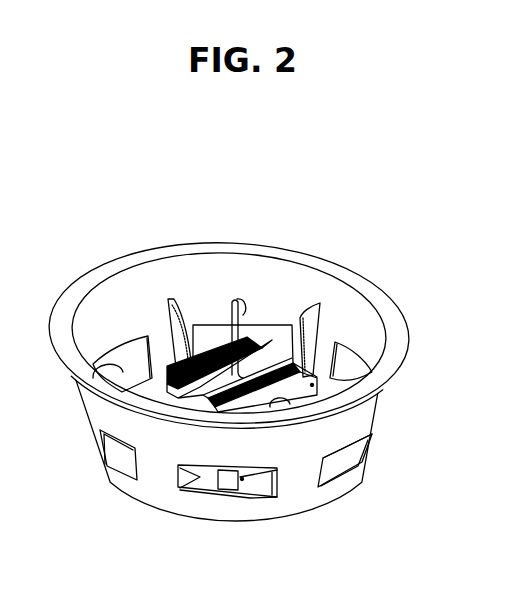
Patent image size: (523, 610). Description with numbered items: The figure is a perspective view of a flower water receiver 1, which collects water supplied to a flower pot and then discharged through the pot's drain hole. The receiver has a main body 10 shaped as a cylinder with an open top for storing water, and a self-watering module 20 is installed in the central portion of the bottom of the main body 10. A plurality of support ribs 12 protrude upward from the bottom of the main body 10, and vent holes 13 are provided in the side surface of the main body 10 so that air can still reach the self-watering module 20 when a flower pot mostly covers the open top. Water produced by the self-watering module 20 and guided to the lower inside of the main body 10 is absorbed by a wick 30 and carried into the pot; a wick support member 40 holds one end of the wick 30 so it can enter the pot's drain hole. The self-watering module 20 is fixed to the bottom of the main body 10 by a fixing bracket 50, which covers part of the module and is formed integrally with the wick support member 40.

The flower water receiver 1 is at (232, 216).
The main body 10 is at (385, 402).
The support ribs 12 is at (312, 323).
The vent hole 13 is at (253, 487).
The self-watering module 20 is at (170, 355).
The wick 30 is at (170, 382).
The wick support member 40 is at (231, 308).
The fixing bracket 50 is at (273, 343).